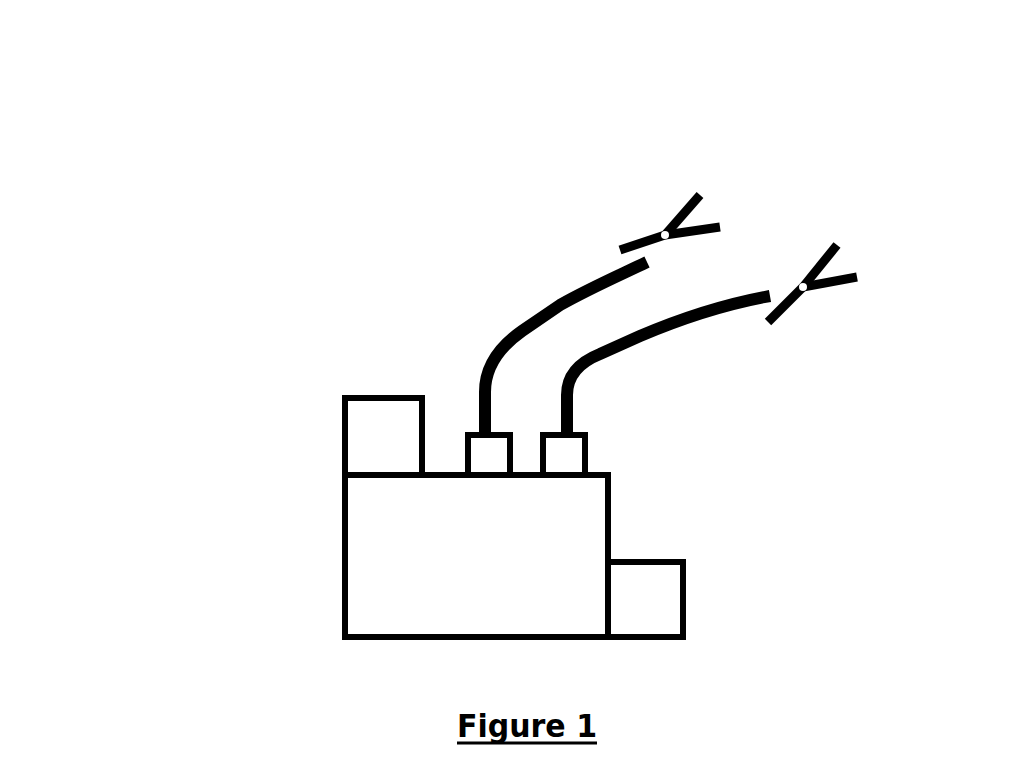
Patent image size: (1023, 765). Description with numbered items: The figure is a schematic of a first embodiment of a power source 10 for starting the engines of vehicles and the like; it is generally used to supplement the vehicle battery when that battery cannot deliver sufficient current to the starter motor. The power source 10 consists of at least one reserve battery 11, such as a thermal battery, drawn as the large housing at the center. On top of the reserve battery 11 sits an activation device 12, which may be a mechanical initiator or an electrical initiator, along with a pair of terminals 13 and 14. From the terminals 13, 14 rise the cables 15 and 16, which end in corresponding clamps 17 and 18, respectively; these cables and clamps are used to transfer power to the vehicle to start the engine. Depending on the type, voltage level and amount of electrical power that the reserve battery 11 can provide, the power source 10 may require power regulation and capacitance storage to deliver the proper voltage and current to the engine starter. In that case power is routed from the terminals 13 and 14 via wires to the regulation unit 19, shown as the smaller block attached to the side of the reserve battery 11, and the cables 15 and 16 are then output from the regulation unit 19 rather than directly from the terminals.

The power source 10 is at (865, 108).
The reserve battery 11 is at (332, 537).
The activation device 12 is at (332, 422).
The terminal 13 is at (472, 422).
The terminal 14 is at (597, 448).
The cable 15 is at (558, 287).
The cable 16 is at (708, 325).
The clamp 17 is at (672, 198).
The clamp 18 is at (847, 300).
The regulation unit 19 is at (695, 612).